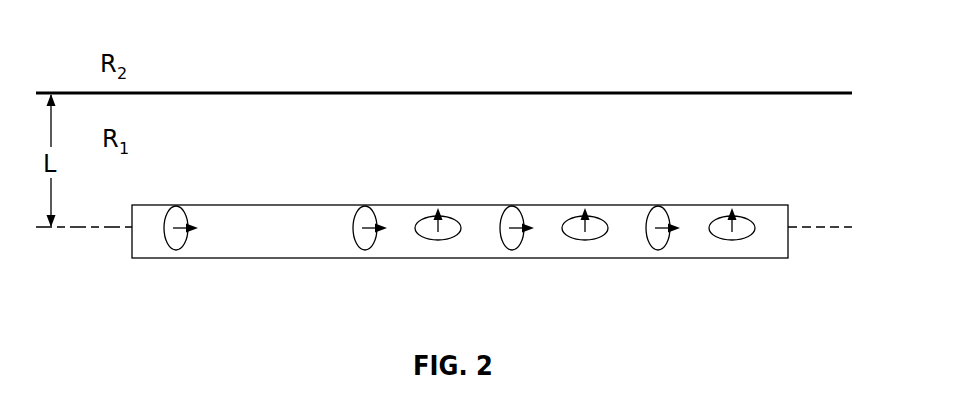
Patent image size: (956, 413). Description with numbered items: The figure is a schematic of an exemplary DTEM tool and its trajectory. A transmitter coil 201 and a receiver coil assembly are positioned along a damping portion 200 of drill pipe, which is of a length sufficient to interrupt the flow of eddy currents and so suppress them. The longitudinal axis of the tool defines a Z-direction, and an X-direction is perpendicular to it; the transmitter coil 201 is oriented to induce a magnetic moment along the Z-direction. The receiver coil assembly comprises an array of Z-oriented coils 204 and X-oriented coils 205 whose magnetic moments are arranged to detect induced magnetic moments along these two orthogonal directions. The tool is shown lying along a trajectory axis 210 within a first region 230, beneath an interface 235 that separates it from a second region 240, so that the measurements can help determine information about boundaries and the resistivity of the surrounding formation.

The damping portion 200 is at (198, 204).
The transmitter coil 201 is at (178, 251).
The Z-oriented coils 204 is at (648, 205).
The X-oriented coils 205 is at (736, 239).
The propagation axis 210 is at (803, 221).
The first region R1 230 is at (653, 148).
The interface 235 is at (785, 95).
The second region R2 240 is at (653, 74).